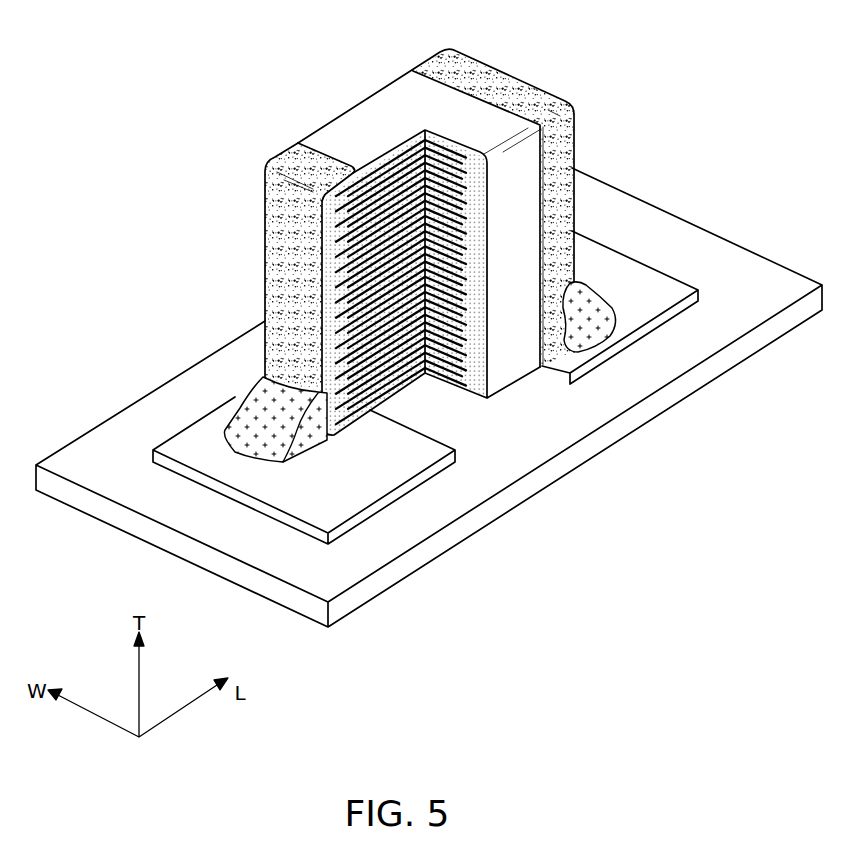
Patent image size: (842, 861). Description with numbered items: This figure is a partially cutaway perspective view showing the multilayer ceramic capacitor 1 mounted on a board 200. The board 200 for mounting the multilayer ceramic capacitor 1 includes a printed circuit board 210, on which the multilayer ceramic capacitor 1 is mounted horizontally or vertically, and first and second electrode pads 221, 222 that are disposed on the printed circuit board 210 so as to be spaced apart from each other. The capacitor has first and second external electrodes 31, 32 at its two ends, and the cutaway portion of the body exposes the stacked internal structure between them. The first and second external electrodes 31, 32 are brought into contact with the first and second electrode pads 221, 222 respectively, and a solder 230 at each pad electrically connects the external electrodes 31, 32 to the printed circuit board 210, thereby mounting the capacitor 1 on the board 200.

The multilayer ceramic capacitor 1 is at (404, 228).
The first external electrode 31 is at (286, 157).
The second external electrode 32 is at (355, 97).
The board 200 is at (429, 397).
The printed circuit board 210 is at (548, 472).
The first electrode pad 221 is at (362, 477).
The second electrode pad 222 is at (645, 288).
The solder 230 is at (583, 303).